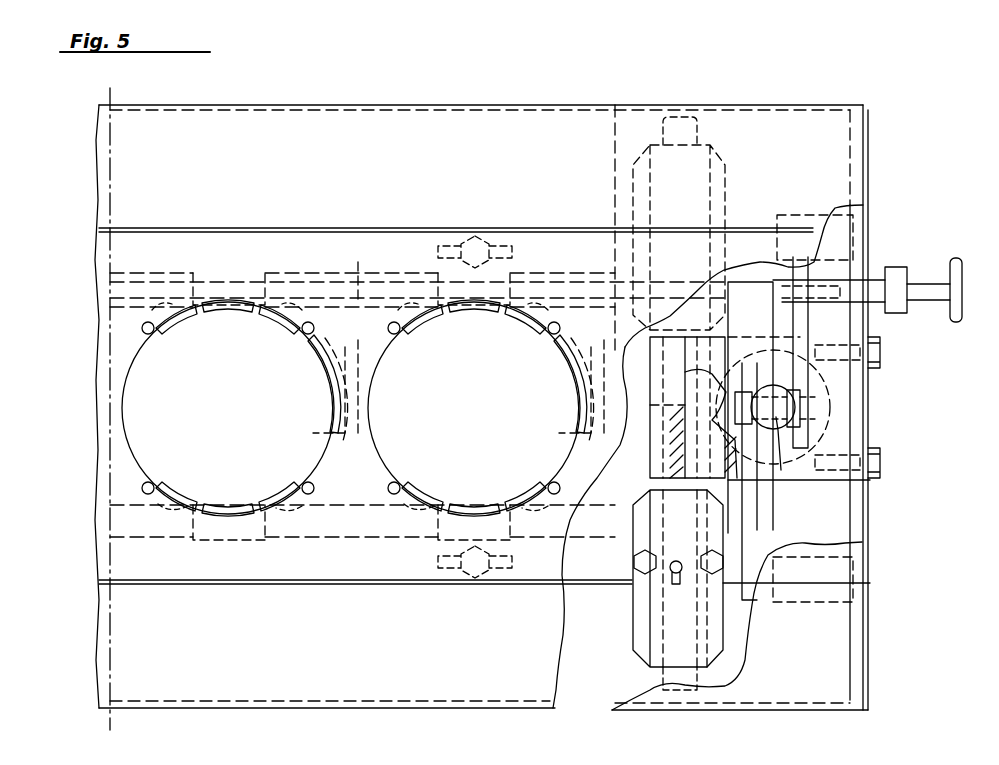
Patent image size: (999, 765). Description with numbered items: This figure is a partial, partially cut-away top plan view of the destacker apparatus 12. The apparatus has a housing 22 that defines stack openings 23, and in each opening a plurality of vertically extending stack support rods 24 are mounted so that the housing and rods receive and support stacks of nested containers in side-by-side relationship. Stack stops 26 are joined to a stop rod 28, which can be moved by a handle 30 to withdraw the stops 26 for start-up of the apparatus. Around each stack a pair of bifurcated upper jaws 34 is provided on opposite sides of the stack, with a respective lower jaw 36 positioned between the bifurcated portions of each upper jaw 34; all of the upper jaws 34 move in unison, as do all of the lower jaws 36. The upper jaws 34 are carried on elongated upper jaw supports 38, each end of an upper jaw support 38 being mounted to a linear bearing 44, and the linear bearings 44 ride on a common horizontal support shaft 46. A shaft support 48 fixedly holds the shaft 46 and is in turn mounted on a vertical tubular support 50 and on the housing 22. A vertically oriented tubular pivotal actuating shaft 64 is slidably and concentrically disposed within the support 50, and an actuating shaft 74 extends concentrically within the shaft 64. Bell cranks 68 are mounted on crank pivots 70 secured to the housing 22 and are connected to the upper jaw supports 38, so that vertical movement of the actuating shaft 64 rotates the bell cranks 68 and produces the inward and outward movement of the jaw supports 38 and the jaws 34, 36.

The destacker apparatus 12 is at (863, 84).
The housing 22 is at (872, 164).
The stack openings 23 is at (312, 455).
The stack support rods 24 is at (152, 336).
The stack stops 26 is at (324, 392).
The stop rod 28 is at (358, 276).
The handle 30 is at (962, 276).
The upper jaws 34 is at (180, 316).
The lower jaws 36 is at (240, 310).
The upper jaw supports 38 is at (592, 568).
The linear bearing 44 is at (727, 194).
The horizontal support shaft 46 is at (700, 132).
The shaft support 48 is at (836, 482).
The vertical tubular support 50 is at (806, 366).
The pivotal actuating shaft 64 is at (800, 416).
The bell cranks 68 is at (806, 312).
The crank pivots 70 is at (781, 215).
The actuating shaft 74 is at (781, 470).